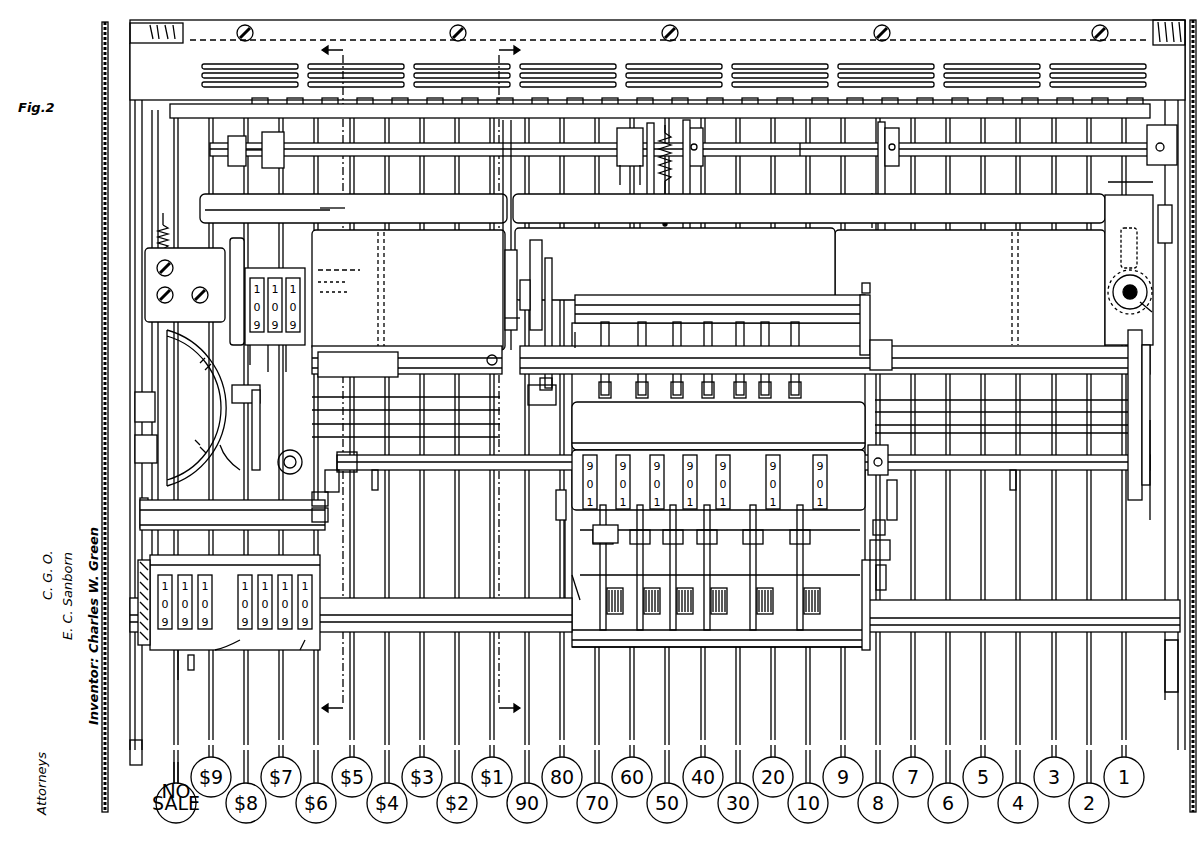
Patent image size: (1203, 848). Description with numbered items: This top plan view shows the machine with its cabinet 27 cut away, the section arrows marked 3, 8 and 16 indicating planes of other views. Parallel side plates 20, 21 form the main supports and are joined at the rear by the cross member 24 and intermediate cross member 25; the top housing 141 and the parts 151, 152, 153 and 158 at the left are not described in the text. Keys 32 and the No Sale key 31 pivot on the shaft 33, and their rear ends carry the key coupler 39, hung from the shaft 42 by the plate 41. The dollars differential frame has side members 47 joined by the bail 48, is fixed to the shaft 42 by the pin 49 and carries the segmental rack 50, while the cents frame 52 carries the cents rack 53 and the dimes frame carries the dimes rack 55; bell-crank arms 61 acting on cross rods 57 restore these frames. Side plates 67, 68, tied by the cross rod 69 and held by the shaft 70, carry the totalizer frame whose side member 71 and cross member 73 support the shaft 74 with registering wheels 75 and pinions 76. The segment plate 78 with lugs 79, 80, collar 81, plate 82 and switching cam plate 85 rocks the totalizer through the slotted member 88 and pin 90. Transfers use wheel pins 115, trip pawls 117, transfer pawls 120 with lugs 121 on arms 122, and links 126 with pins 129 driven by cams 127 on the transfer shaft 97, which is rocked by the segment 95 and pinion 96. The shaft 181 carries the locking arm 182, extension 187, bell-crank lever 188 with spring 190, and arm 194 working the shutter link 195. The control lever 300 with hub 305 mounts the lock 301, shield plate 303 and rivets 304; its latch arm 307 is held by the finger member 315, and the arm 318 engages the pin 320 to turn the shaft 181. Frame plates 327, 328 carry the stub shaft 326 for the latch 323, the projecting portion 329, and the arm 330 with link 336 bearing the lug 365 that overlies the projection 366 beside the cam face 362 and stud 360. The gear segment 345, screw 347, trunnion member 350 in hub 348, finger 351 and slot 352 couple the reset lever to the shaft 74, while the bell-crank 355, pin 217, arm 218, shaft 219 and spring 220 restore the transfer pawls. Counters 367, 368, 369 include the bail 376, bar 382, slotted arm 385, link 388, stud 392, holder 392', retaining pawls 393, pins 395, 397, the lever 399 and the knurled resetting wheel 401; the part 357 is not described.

The section line 3 is at (508, 382).
The section line 8 is at (332, 382).
The section line 16 is at (880, 441).
The side plate 20 is at (135, 312).
The side plate 21 is at (1170, 650).
The cross member 24 is at (163, 44).
The intermediate cross member 25 is at (625, 143).
The cabinet 27 is at (103, 186).
The No Sale key 31 is at (172, 772).
The keys 32 is at (387, 678).
The shaft 33 is at (731, 416).
The key coupler 39 is at (970, 290).
The plate 41 is at (145, 272).
The shaft 42 is at (835, 357).
The side members 47 is at (500, 243).
The cross bar or bail 48 is at (353, 208).
The pin 49 is at (485, 348).
The segmental rack 50 is at (740, 322).
The cents differential frame 52 is at (809, 208).
The cents operating rack 53 is at (830, 395).
The dimes rack 55 is at (768, 322).
The cross rod 57 is at (743, 459).
The bell-crank arm 61 is at (378, 488).
The side plate 67 is at (575, 598).
The side plate 68 is at (872, 636).
The cross rod 69 is at (716, 294).
The shaft 70 is at (351, 614).
The side member 71 is at (572, 562).
The cross member 73 is at (718, 426).
The totalizer shaft 74 is at (476, 470).
The registering wheels 75 is at (660, 452).
The pinions 76 is at (830, 455).
The segment plate 78 is at (516, 300).
The lug 79 is at (542, 246).
The lug 80 is at (552, 393).
The supporting collar 81 is at (505, 322).
The plate 82 is at (552, 268).
The switching cam plate 85 is at (585, 347).
The slotted member 88 is at (563, 496).
The pin 90 is at (542, 399).
The segment 95 is at (870, 287).
The pinion 96 is at (870, 332).
The transfer shaft 97 is at (892, 352).
The pin 115 is at (678, 455).
The trip pawl 117 is at (758, 513).
The transfer pawls 120 is at (705, 575).
The lug 121 is at (600, 533).
The arms 122 is at (800, 590).
The links 126 is at (660, 322).
The transfer cams 127 is at (678, 378).
The pin 129 is at (760, 400).
The cabinet top 141 is at (657, 63).
The spring 151 is at (158, 238).
The block 152 is at (142, 405).
The block 153 is at (138, 445).
The segment 158 is at (196, 408).
The shaft 181 is at (800, 150).
The locking arm 182 is at (628, 168).
The extension 187 is at (647, 205).
The bell-crank locking lever 188 is at (690, 190).
The spring 190 is at (668, 195).
The arm 194 is at (880, 180).
The link 195 is at (890, 227).
The pin 217 is at (884, 585).
The arm 218 is at (882, 555).
The shaft 219 is at (825, 545).
The coil spring 220 is at (885, 528).
The control lever 300 is at (1128, 350).
The lock 301 is at (1113, 288).
The shield plate 303 is at (1120, 296).
The rivets 304 is at (1145, 312).
The hub 305 is at (1165, 205).
The latch arm 307 is at (1152, 465).
The finger member 315 is at (1110, 306).
The arm 318 is at (1124, 180).
The pin 320 is at (1142, 403).
The latch 323 is at (190, 560).
The stub shaft 326 is at (232, 512).
The frame plate 327 is at (310, 543).
The frame plate 328 is at (148, 498).
The projecting portion 329 is at (660, 109).
The arm 330 is at (229, 652).
The link 336 is at (238, 448).
The gear segment 345 is at (322, 370).
The screw 347 is at (262, 465).
The hub 348 is at (328, 516).
The trunnion member 350 is at (328, 500).
The finger 351 is at (366, 460).
The slot 352 is at (340, 482).
The bell-crank 355 is at (897, 497).
The hub 357 is at (888, 462).
The stud 360 is at (261, 150).
The cam face 362 is at (260, 440).
The overturned lug 365 is at (232, 388).
The projection 366 is at (190, 405).
The operations counter 367 is at (290, 590).
The no-sale counter 368 is at (180, 678).
The reset counter 369 is at (275, 301).
The operating bail 376 is at (1129, 270).
The stationary bar 382 is at (295, 656).
The slotted arm 385 is at (191, 670).
The link 388 is at (195, 492).
The stud 392 is at (267, 202).
The holder 392' is at (290, 375).
The retaining pawls 393 is at (275, 365).
The pin 395 is at (230, 285).
The pin 397 is at (362, 282).
The lever 399 is at (345, 209).
The knurled wheel 401 is at (143, 664).